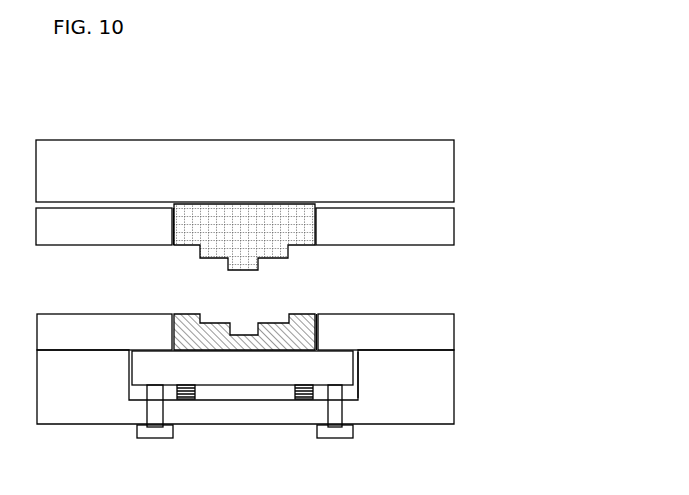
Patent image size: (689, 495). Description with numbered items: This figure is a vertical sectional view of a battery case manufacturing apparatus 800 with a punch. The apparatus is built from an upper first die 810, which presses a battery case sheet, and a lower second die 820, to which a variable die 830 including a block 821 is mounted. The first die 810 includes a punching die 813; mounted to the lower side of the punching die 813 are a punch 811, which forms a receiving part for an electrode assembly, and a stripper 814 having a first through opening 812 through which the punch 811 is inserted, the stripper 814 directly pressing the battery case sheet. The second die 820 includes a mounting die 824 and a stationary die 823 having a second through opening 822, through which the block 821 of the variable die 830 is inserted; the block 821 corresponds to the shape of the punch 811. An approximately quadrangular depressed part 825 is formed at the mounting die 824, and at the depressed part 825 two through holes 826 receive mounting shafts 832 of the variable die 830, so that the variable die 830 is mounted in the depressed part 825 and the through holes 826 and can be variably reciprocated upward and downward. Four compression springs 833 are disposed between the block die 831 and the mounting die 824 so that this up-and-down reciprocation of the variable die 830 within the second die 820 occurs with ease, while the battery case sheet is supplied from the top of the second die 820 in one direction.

The battery case manufacturing apparatus 800 is at (76, 130).
The first die 810 is at (497, 134).
The punch 811 is at (270, 252).
The first through opening 812 is at (170, 232).
The punching die 813 is at (444, 158).
The stripper 814 is at (444, 221).
The second die 820 is at (497, 306).
The block 821 is at (202, 335).
The second through opening 822 is at (318, 332).
The stationary die 823 is at (444, 333).
The mounting die 824 is at (444, 398).
The depressed part 825 is at (358, 377).
The through holes 826 is at (145, 410).
The variable die 830 is at (278, 398).
The block die 831 is at (248, 373).
The mounting shafts 832 is at (337, 413).
The compression springs 833 is at (196, 392).